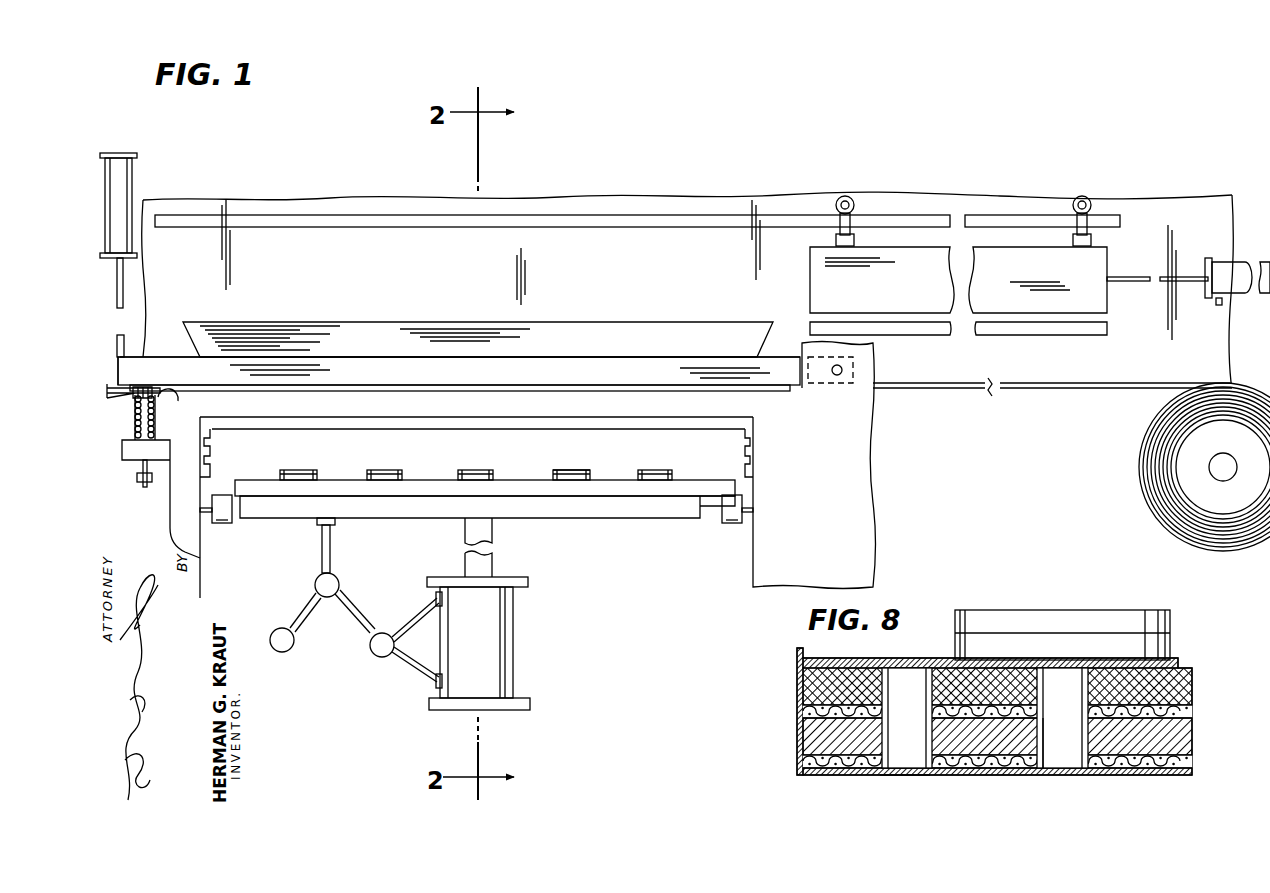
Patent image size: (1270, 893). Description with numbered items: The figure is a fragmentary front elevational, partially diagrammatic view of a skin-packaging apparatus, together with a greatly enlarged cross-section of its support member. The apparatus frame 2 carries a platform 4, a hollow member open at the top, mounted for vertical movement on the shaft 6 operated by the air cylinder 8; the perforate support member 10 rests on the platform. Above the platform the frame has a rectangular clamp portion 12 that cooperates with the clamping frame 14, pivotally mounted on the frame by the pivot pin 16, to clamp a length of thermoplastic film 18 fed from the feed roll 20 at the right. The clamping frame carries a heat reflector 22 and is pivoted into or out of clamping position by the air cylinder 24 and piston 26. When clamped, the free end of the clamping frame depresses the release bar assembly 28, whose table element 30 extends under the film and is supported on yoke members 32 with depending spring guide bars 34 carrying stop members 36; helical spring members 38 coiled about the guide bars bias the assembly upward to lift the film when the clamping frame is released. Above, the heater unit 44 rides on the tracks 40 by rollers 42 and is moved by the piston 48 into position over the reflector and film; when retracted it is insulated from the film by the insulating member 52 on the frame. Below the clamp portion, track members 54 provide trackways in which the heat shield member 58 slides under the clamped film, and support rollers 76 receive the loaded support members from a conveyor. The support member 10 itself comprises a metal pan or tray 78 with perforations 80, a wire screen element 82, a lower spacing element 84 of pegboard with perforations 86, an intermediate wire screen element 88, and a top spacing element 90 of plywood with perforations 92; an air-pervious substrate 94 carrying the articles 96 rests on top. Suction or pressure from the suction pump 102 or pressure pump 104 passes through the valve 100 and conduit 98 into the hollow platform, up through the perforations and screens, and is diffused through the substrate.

In FIG. 1, the apparatus frame 2 is at (693, 197).
In FIG. 1, the platform 4 is at (616, 520).
In FIG. 1, the shaft 6 is at (496, 572).
In FIG. 1, the air cylinder 8 is at (514, 655).
In FIG. 1, the perforate support member 10 is at (423, 479).
In FIG. 8, the perforate support member 10 is at (793, 710).
In FIG. 1, the clamp portion 12 is at (570, 413).
In FIG. 1, the clamping frame 14 is at (583, 382).
In FIG. 1, the pivot pin 16 is at (853, 368).
In FIG. 1, the thermoplastic film 18 is at (410, 382).
In FIG. 1, the feed roll 20 is at (1140, 482).
In FIG. 1, the heat reflector 22 is at (601, 319).
In FIG. 1, the air cylinder 24 is at (130, 187).
In FIG. 1, the piston 26 is at (124, 292).
In FIG. 1, the release bar assembly 28 is at (118, 410).
In FIG. 1, the table element 30 is at (168, 390).
In FIG. 1, the yoke members 32 is at (150, 387).
In FIG. 1, the spring guide bars 34 is at (142, 483).
In FIG. 1, the stop members 36 is at (165, 476).
In FIG. 1, the spring members 38 is at (152, 423).
In FIG. 1, the tracks 40 is at (995, 215).
In FIG. 1, the rollers 42 is at (848, 197).
In FIG. 1, the heater unit 44 is at (806, 293).
In FIG. 1, the piston 48 is at (1194, 276).
In FIG. 1, the insulating member 52 is at (1020, 336).
In FIG. 1, the track members 54 is at (212, 464).
In FIG. 1, the heat shield member 58 is at (575, 447).
In FIG. 1, the support rollers 76 is at (220, 524).
In FIG. 8, the metal pan or tray 78 is at (852, 776).
In FIG. 8, the perforations 80 is at (905, 776).
In FIG. 8, the wire screen element 82 is at (1192, 762).
In FIG. 8, the lower spacing element 84 is at (1192, 742).
In FIG. 8, the perforations 86 is at (1062, 748).
In FIG. 8, the intermediate wire screen element 88 is at (1193, 712).
In FIG. 8, the top spacing element 90 is at (1185, 690).
In FIG. 8, the perforations 92 is at (930, 695).
In FIG. 8, the air-pervious substrate 94 is at (852, 648).
In FIG. 1, the articles 96 is at (385, 470).
In FIG. 8, the articles 96 is at (1070, 610).
In FIG. 1, the conduit 98 is at (333, 559).
In FIG. 1, the valve 100 is at (340, 588).
In FIG. 1, the suction pump 102 is at (286, 653).
In FIG. 1, the pressure pump 104 is at (378, 657).